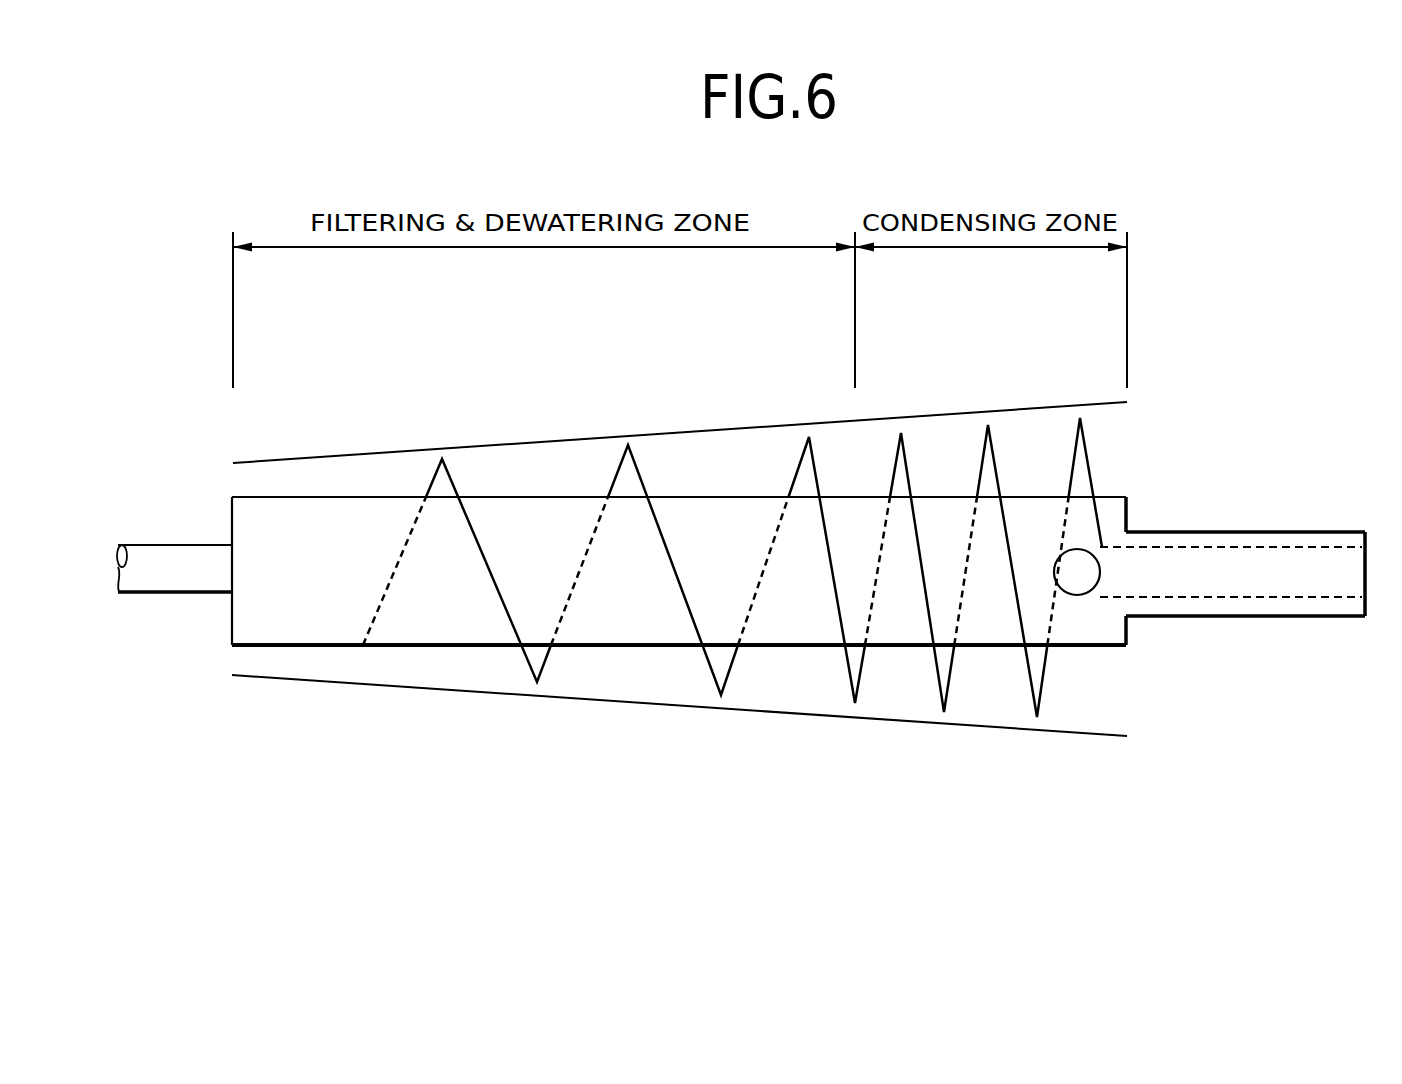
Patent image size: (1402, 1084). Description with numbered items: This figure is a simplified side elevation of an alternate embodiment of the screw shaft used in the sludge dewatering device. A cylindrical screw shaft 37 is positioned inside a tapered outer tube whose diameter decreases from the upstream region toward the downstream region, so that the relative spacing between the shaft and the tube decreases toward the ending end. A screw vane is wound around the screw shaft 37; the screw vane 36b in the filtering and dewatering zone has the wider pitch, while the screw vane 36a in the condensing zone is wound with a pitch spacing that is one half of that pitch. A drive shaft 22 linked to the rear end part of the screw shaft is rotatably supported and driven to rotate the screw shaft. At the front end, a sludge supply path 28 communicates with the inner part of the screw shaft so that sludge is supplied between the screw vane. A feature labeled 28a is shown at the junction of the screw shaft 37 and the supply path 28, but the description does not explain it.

The drive shaft 22 is at (167, 570).
The sludge supply path 28 is at (1227, 570).
The bearing 28a is at (1077, 563).
The screw vane in the condensing zone 36a is at (907, 460).
The screw vane in the dewatering zone 36b is at (613, 482).
The cylindrical screw shaft 37 is at (602, 628).